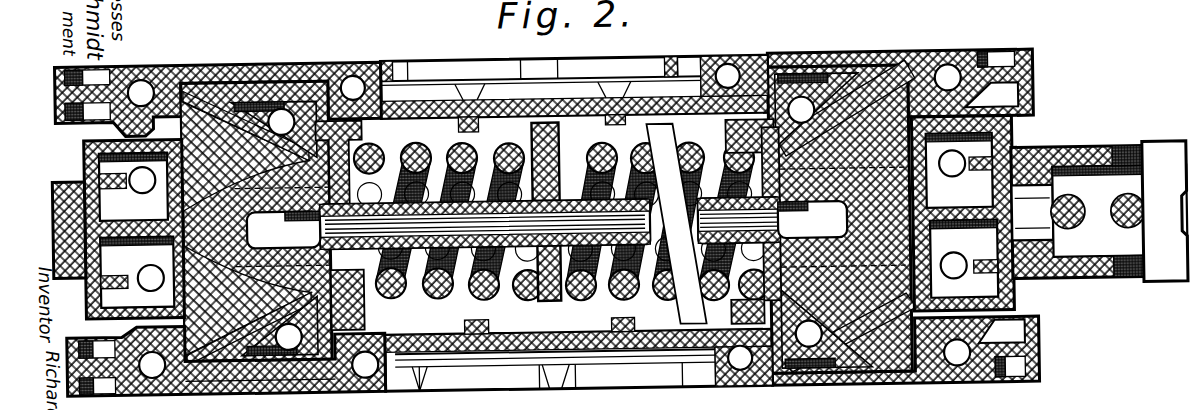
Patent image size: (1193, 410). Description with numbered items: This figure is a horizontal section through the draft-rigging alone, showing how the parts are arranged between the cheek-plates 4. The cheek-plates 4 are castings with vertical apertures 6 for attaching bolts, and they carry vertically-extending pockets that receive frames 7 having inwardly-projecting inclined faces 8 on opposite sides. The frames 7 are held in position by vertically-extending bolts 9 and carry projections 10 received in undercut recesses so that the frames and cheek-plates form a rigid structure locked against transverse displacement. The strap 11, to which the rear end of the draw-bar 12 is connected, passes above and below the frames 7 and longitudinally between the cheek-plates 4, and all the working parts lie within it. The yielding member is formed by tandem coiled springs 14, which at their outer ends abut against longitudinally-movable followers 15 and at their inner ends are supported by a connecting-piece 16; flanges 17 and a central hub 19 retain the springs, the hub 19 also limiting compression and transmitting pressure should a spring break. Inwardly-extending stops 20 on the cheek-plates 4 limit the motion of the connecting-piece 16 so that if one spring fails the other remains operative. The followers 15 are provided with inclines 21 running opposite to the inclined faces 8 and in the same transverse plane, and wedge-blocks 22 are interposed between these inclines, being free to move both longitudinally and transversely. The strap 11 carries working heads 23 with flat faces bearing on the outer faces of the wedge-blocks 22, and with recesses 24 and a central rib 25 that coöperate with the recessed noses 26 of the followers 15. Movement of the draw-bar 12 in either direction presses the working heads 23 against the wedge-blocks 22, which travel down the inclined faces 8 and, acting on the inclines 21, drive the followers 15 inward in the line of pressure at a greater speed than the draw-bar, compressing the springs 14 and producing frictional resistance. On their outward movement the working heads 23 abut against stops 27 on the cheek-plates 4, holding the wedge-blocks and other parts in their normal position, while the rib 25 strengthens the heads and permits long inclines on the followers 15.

The cheek-plates 4 is at (579, 219).
The vertical apertures 6 is at (952, 78).
The frames 7 is at (213, 84).
The inclined faces 8 is at (265, 92).
The bolts 9 is at (298, 94).
The projections 10 is at (325, 75).
The strap 11 is at (68, 176).
The draw-bar 12 is at (1099, 212).
The springs 14 is at (676, 222).
The followers 15 is at (547, 224).
The connecting-piece 16 is at (550, 232).
The flanges 17 is at (360, 150).
The central hub 19 is at (551, 225).
The stops 20 is at (437, 320).
The inclines 21 is at (180, 183).
The wedge-blocks 22 is at (200, 97).
The working heads 23 is at (112, 287).
The recesses 24 is at (940, 212).
The central rib 25 is at (549, 217).
The recessed noses 26 is at (147, 303).
The stops 27 is at (118, 122).